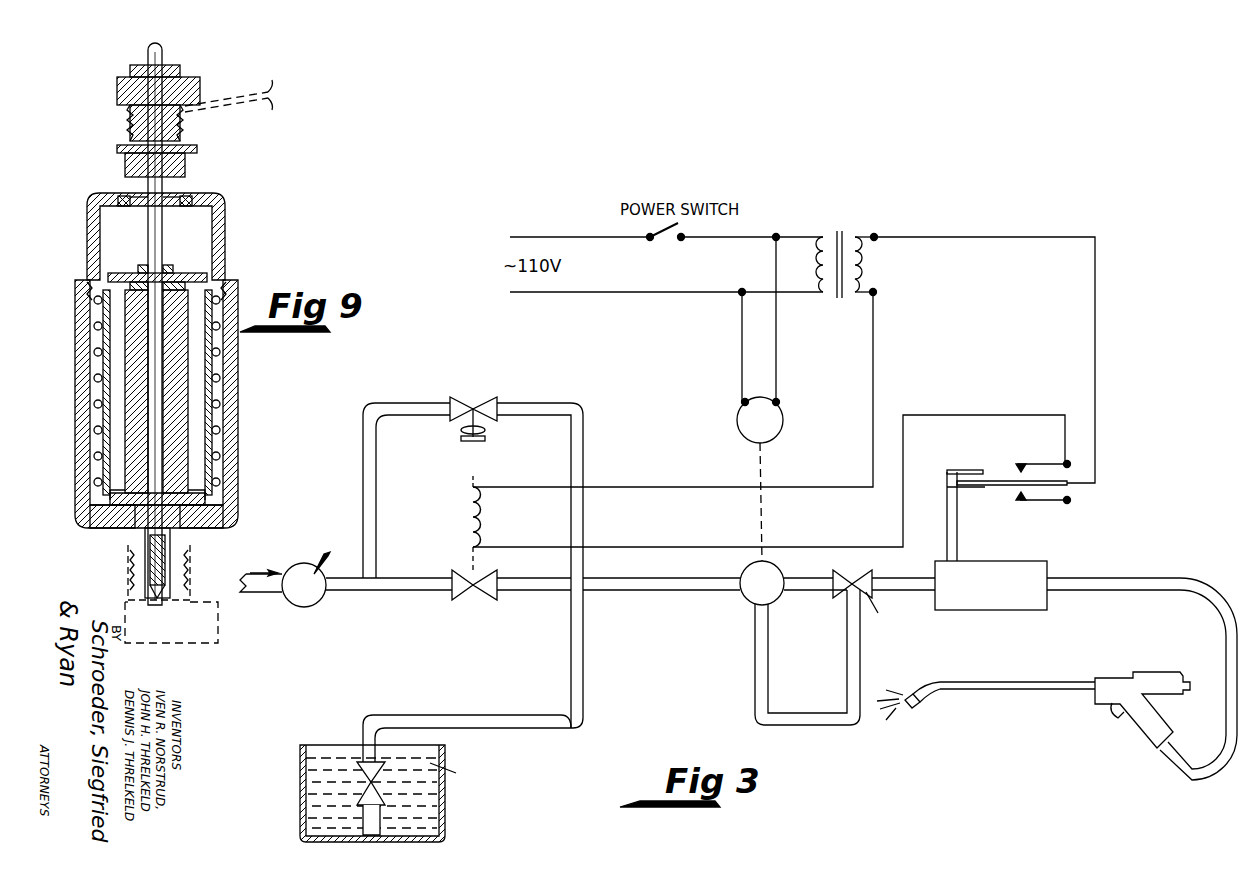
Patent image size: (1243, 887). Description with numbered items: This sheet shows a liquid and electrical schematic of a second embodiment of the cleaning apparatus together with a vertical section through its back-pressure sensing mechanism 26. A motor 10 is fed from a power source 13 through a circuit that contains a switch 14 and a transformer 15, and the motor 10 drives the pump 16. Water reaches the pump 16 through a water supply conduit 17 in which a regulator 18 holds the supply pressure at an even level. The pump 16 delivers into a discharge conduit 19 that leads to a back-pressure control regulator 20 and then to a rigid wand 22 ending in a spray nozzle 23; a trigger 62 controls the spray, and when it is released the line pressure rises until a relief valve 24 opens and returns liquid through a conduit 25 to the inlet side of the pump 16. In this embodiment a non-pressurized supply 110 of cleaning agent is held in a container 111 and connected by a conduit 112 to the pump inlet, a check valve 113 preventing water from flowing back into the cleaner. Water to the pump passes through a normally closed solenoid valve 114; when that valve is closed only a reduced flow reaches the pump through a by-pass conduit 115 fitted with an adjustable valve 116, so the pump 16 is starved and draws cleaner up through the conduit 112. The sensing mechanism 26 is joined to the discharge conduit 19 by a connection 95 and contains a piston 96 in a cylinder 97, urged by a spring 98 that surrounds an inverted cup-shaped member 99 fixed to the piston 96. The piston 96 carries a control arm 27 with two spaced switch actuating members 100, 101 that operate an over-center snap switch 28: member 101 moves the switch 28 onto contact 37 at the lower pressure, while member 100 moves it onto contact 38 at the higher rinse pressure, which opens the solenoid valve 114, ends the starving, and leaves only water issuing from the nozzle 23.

In FIG. 3, the motor 10 is at (781, 416).
In FIG. 3, the power source 13 is at (536, 237).
In FIG. 3, the switch 14 is at (668, 234).
In FIG. 3, the transformer 15 is at (838, 233).
In FIG. 3, the pump 16 is at (782, 597).
In FIG. 3, the water supply conduit 17 is at (288, 596).
In FIG. 3, the regulator 18 is at (296, 567).
In FIG. 9, the discharge conduit 19 is at (165, 650).
In FIG. 3, the discharge conduit 19 is at (1228, 628).
In FIG. 3, the back-pressure control regulator 20 is at (1153, 670).
In FIG. 3, the wand 22 is at (1038, 690).
In FIG. 3, the spray nozzle 23 is at (920, 705).
In FIG. 3, the relief valve 24 is at (838, 598).
In FIG. 3, the conduit 25 is at (828, 726).
In FIG. 9, the pressure sensing mechanism 26 is at (50, 310).
In FIG. 3, the pressure sensing mechanism 26 is at (935, 596).
In FIG. 9, the control arm 27 is at (162, 190).
In FIG. 3, the control arm 27 is at (947, 512).
In FIG. 9, the switch 28 is at (228, 108).
In FIG. 3, the switch 28 is at (985, 479).
In FIG. 3, the contact 37 is at (1000, 493).
In FIG. 3, the contact 38 is at (1010, 460).
In FIG. 3, the trigger 62 is at (1115, 716).
In FIG. 9, the connection 95 is at (140, 560).
In FIG. 9, the piston 96 is at (150, 455).
In FIG. 9, the cylinder 97 is at (168, 560).
In FIG. 9, the spring 98 is at (212, 452).
In FIG. 9, the inverted cup-shaped member 99 is at (140, 273).
In FIG. 9, the switch actuating member 100 is at (117, 150).
In FIG. 3, the switch actuating member 100 is at (978, 488).
In FIG. 9, the switch actuating member 101 is at (117, 93).
In FIG. 3, the switch actuating member 101 is at (968, 470).
In FIG. 3, the non-pressurized supply 110 is at (352, 794).
In FIG. 3, the container 111 is at (300, 771).
In FIG. 3, the conduit 112 is at (494, 730).
In FIG. 3, the check valve 113 is at (382, 808).
In FIG. 3, the solenoid valve 114 is at (488, 595).
In FIG. 3, the by-pass conduit 115 is at (543, 408).
In FIG. 3, the adjustable valve 116 is at (470, 400).